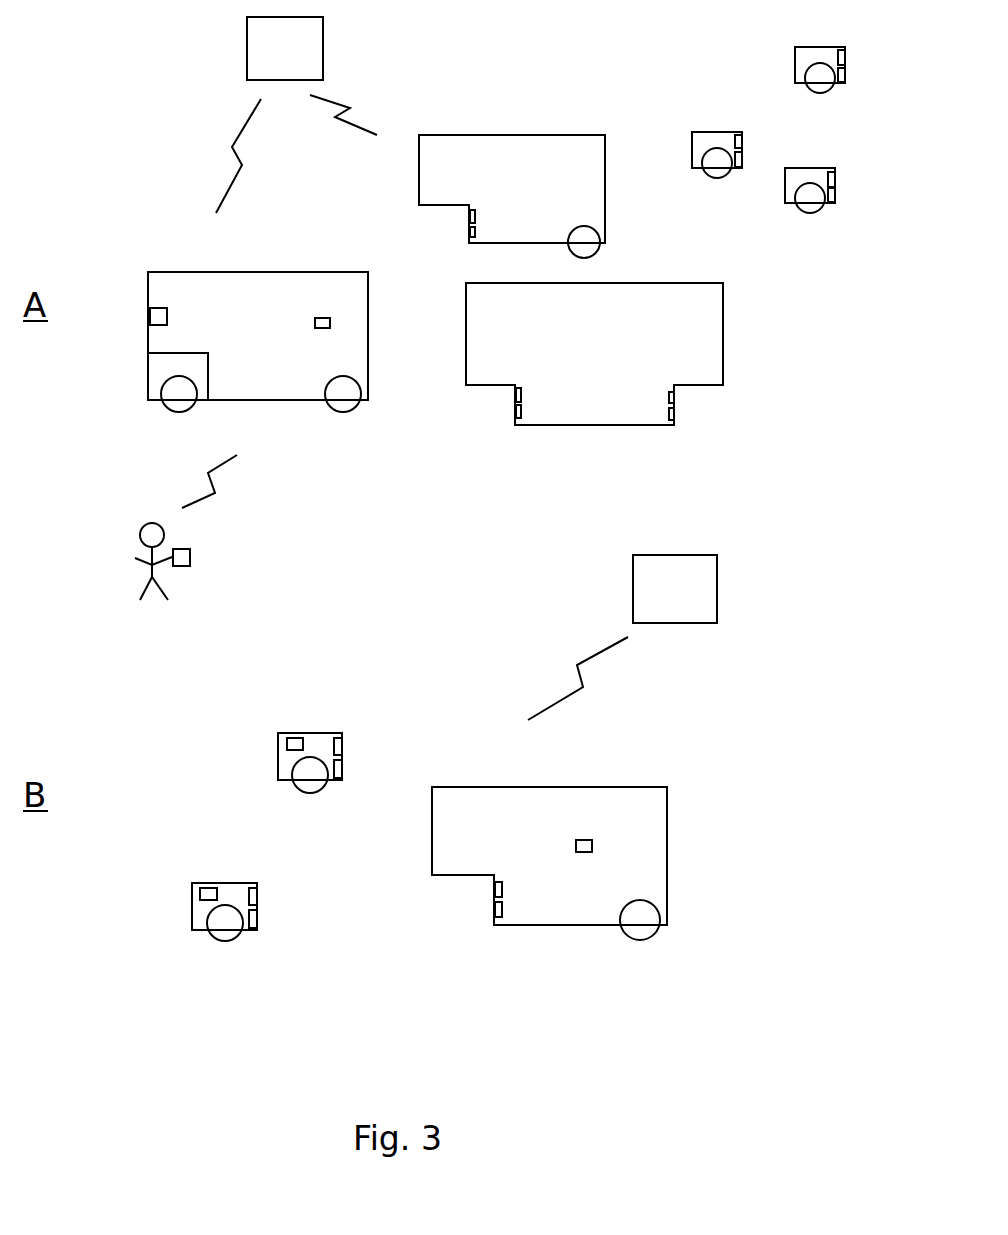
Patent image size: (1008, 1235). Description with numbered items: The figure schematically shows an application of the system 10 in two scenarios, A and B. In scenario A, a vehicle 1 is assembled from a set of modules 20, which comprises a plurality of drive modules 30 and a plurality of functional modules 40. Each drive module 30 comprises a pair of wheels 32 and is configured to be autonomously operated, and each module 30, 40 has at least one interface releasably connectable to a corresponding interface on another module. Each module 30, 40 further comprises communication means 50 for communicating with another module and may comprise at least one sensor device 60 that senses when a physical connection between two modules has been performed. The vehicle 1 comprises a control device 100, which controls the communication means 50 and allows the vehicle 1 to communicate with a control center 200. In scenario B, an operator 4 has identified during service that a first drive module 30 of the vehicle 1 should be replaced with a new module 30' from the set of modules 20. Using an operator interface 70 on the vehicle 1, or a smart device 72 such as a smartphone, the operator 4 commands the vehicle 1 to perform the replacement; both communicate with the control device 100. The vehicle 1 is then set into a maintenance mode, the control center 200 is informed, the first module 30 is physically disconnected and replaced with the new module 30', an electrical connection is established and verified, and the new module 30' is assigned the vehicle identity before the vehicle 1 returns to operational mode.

The vehicle 1 is at (148, 347).
The operator 4 is at (152, 575).
The system 10 is at (165, 197).
The set of modules 20 is at (810, 314).
The drive module 30 is at (523, 467).
The new module 30' is at (315, 729).
The pair of wheels 32 is at (835, 88).
The functional module 40 is at (607, 198).
The communication means 50 is at (469, 216).
The sensor device 60 is at (469, 232).
The operator interface 70 is at (167, 313).
The smart device 72 is at (192, 557).
The control device 100 is at (313, 323).
The control center 200 is at (449, 368).